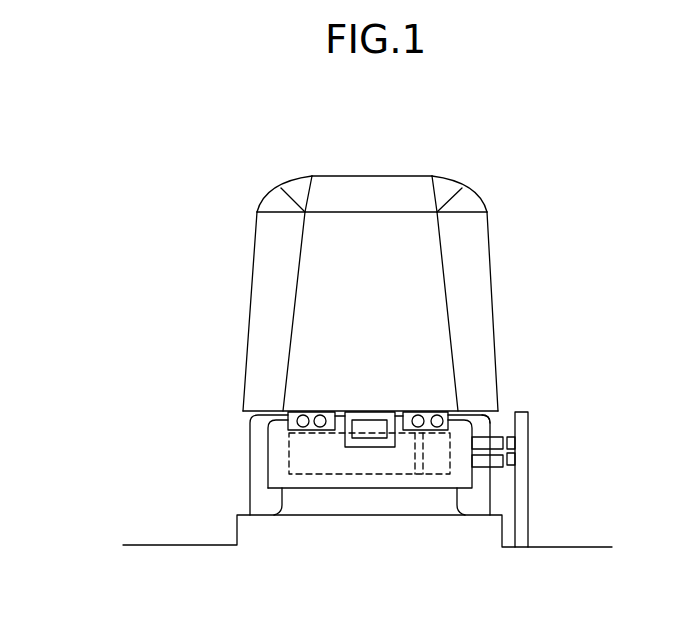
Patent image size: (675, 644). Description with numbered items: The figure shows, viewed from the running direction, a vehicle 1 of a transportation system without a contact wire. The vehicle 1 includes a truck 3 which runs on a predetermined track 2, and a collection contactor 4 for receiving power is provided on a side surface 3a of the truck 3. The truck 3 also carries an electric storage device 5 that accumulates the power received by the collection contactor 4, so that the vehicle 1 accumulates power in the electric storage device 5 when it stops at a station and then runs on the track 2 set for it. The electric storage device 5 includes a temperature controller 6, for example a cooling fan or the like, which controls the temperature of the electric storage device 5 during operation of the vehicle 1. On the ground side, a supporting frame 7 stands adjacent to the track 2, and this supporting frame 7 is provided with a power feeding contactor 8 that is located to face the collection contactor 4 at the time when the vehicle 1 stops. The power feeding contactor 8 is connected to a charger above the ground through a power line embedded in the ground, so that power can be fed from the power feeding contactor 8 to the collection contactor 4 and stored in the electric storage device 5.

The vehicle 1 is at (437, 141).
The track 2 is at (247, 512).
The truck 3 is at (277, 452).
The side surface 3a is at (485, 430).
The collection contactor 4 is at (483, 467).
The electric storage device 5 is at (315, 474).
The temperature controller 6 is at (423, 474).
The supporting frame 7 is at (527, 498).
The power feeding contactor 8 is at (512, 458).